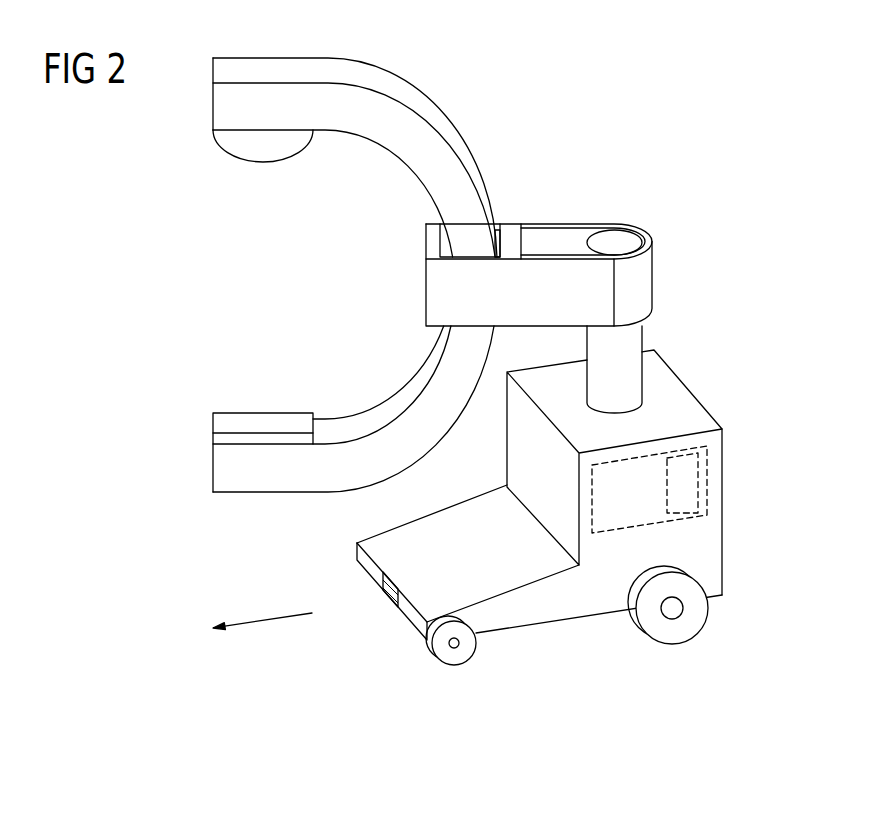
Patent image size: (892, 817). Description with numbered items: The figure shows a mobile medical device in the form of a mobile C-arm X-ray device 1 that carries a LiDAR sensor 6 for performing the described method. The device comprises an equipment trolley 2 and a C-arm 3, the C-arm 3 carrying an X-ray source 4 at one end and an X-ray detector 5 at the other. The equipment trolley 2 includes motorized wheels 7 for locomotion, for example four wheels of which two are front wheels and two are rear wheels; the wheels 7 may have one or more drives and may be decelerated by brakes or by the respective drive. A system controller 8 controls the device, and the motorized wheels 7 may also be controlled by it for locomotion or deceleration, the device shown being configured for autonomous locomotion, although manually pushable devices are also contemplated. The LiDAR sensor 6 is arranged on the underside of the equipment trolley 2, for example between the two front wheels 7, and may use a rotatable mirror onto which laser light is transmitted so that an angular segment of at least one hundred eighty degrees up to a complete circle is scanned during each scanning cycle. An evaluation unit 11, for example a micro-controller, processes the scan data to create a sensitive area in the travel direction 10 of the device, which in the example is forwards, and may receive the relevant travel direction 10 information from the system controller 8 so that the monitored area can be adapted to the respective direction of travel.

The mobile C-arm X-ray device 1 is at (616, 113).
The equipment trolley 2 is at (725, 530).
The C-arm 3 is at (441, 118).
The X-ray source 4 is at (267, 156).
The X-ray detector 5 is at (265, 417).
The LiDAR sensor 6 is at (388, 595).
The motorized wheels 7 is at (355, 556).
The system controller 8 is at (619, 507).
The travel direction 10 is at (262, 622).
The evaluation unit 11 is at (692, 482).